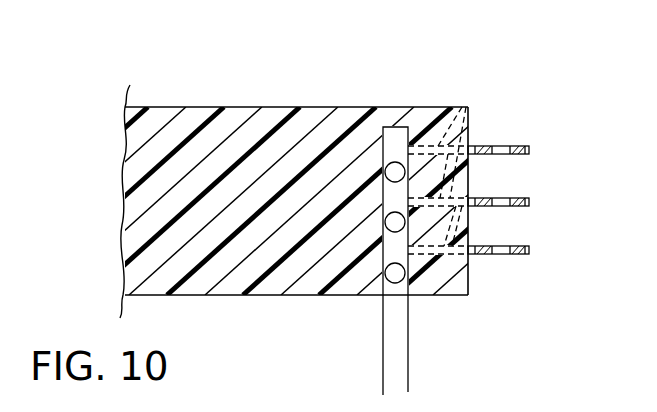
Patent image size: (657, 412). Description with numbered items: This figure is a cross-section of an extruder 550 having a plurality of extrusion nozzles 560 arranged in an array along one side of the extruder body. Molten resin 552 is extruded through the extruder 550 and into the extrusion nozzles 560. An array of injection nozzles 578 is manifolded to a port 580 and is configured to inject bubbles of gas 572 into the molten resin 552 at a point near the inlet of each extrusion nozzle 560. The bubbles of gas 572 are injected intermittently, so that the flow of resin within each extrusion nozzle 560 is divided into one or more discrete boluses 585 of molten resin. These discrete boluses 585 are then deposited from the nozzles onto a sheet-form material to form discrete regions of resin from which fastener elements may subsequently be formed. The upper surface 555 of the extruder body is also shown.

The extruder 550 is at (487, 60).
The molten resin 552 is at (262, 277).
The top surface of body 555 is at (269, 107).
The extrusion nozzles 560 is at (518, 146).
The bubbles of gas 572 is at (386, 170).
The injection nozzles 578 is at (447, 109).
The port 580 is at (408, 360).
The discrete boluses of molten resin 585 is at (483, 255).